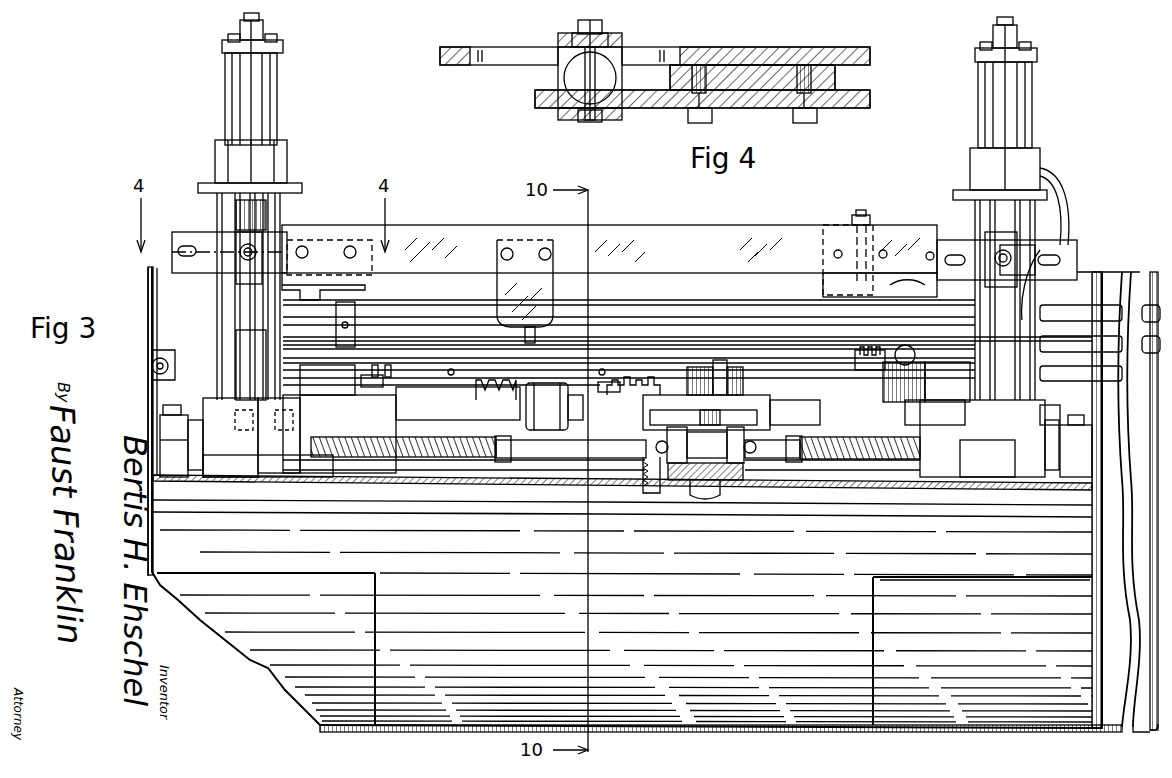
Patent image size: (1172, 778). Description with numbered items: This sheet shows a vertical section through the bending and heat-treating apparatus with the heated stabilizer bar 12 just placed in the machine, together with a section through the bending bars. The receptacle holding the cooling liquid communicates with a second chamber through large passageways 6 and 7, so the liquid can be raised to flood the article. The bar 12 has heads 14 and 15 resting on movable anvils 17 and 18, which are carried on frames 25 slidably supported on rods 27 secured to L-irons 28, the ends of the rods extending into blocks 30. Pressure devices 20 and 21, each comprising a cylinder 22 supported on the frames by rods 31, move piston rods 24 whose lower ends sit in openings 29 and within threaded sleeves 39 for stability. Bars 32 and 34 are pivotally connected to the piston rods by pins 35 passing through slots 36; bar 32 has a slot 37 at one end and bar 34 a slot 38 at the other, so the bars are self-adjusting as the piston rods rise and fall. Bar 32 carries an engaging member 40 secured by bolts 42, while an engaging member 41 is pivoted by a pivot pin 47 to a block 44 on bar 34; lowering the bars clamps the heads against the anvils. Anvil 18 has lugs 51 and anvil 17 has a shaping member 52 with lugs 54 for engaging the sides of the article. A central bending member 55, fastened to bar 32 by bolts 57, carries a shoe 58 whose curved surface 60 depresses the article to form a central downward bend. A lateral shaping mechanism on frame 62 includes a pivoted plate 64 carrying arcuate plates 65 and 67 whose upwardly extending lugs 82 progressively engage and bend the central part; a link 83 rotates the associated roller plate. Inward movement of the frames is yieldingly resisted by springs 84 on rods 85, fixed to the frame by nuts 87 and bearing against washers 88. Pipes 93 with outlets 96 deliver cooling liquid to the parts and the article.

In FIG. 3, the passageway 6 is at (298, 640).
In FIG. 3, the passageway 7 is at (945, 678).
In FIG. 3, the bar 12 is at (400, 360).
In FIG. 3, the head 14 is at (330, 372).
In FIG. 3, the head 15 is at (935, 392).
In FIG. 3, the anvil 17 is at (305, 392).
In FIG. 3, the anvil 18 is at (900, 375).
In FIG. 3, the pressure device 20 is at (243, 175).
In FIG. 3, the pressure device 21 is at (995, 185).
In FIG. 3, the cylinder 22 is at (245, 100).
In FIG. 3, the piston rod 24 is at (247, 300).
In FIG. 4, the piston rod 24 is at (605, 70).
In FIG. 3, the frame 25 is at (215, 395).
In FIG. 3, the rod 27 is at (1055, 445).
In FIG. 3, the L-iron 28 is at (1100, 482).
In FIG. 3, the opening 29 is at (237, 450).
In FIG. 3, the block 30 is at (165, 447).
In FIG. 3, the rod 31 is at (1030, 240).
In FIG. 3, the bar 32 is at (297, 232).
In FIG. 4, the bar 32 is at (656, 100).
In FIG. 3, the bar 34 is at (180, 258).
In FIG. 4, the bar 34 is at (690, 62).
In FIG. 3, the pin 35 is at (242, 248).
In FIG. 4, the pin 35 is at (562, 108).
In FIG. 4, the slot 36 is at (556, 79).
In FIG. 3, the slot 37 is at (968, 255).
In FIG. 3, the slot 38 is at (195, 245).
In FIG. 4, the slot 38 is at (508, 56).
In FIG. 3, the threaded sleeve 39 is at (1110, 304).
In FIG. 3, the engaging member 40 is at (352, 280).
In FIG. 4, the engaging member 40 is at (752, 82).
In FIG. 3, the engaging member 41 is at (845, 286).
In FIG. 3, the bolt 42 is at (307, 247).
In FIG. 4, the bolt 42 is at (708, 115).
In FIG. 3, the block 44 is at (828, 250).
In FIG. 3, the pivot pin 47 is at (842, 244).
In FIG. 3, the lug 51 is at (860, 352).
In FIG. 3, the shaping member 52 is at (436, 395).
In FIG. 3, the lug 54 is at (500, 392).
In FIG. 3, the central bending member 55 is at (515, 282).
In FIG. 3, the bolt 57 is at (502, 252).
In FIG. 3, the shoe 58 is at (532, 322).
In FIG. 3, the curved surface 60 is at (530, 390).
In FIG. 3, the frame 62 is at (688, 482).
In FIG. 3, the plate 64 is at (720, 358).
In FIG. 3, the arcuate plate 65 is at (648, 385).
In FIG. 3, the arcuate plate 67 is at (740, 395).
In FIG. 3, the lug 82 is at (695, 365).
In FIG. 3, the link 83 is at (648, 478).
In FIG. 3, the spring 84 is at (440, 458).
In FIG. 3, the rod 85 is at (533, 458).
In FIG. 3, the nut 87 is at (735, 463).
In FIG. 3, the washer 88 is at (505, 462).
In FIG. 3, the pipe 93 is at (152, 360).
In FIG. 3, the outlet 96 is at (452, 375).